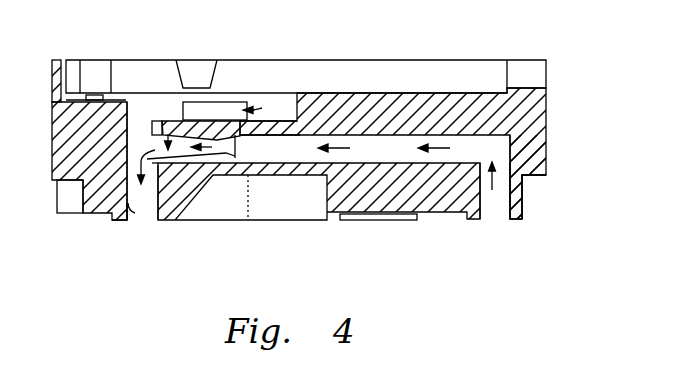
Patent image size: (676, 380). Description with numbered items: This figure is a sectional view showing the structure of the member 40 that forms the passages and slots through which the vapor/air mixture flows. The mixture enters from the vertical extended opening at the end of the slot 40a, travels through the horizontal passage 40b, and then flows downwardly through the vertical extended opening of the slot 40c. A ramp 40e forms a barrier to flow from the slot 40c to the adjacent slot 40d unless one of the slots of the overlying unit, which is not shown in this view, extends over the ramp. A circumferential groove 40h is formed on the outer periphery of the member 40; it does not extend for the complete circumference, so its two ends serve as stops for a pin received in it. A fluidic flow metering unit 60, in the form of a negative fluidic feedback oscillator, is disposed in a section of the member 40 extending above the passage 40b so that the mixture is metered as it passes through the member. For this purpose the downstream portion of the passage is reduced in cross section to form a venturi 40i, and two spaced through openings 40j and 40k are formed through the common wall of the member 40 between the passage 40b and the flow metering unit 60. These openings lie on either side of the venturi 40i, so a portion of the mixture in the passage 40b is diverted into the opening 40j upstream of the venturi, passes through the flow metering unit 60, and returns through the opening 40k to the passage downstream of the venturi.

The member 40 is at (561, 122).
The slot 40a is at (512, 220).
The horizontal passage 40b is at (493, 221).
The slot 40c is at (131, 220).
The slot 40d is at (288, 214).
The ramp 40e is at (146, 221).
The circumferential groove 40h is at (538, 177).
The venturi 40i is at (232, 153).
The through opening 40j is at (273, 148).
The through opening 40k is at (168, 134).
The fluidic flow metering unit 60 is at (228, 106).